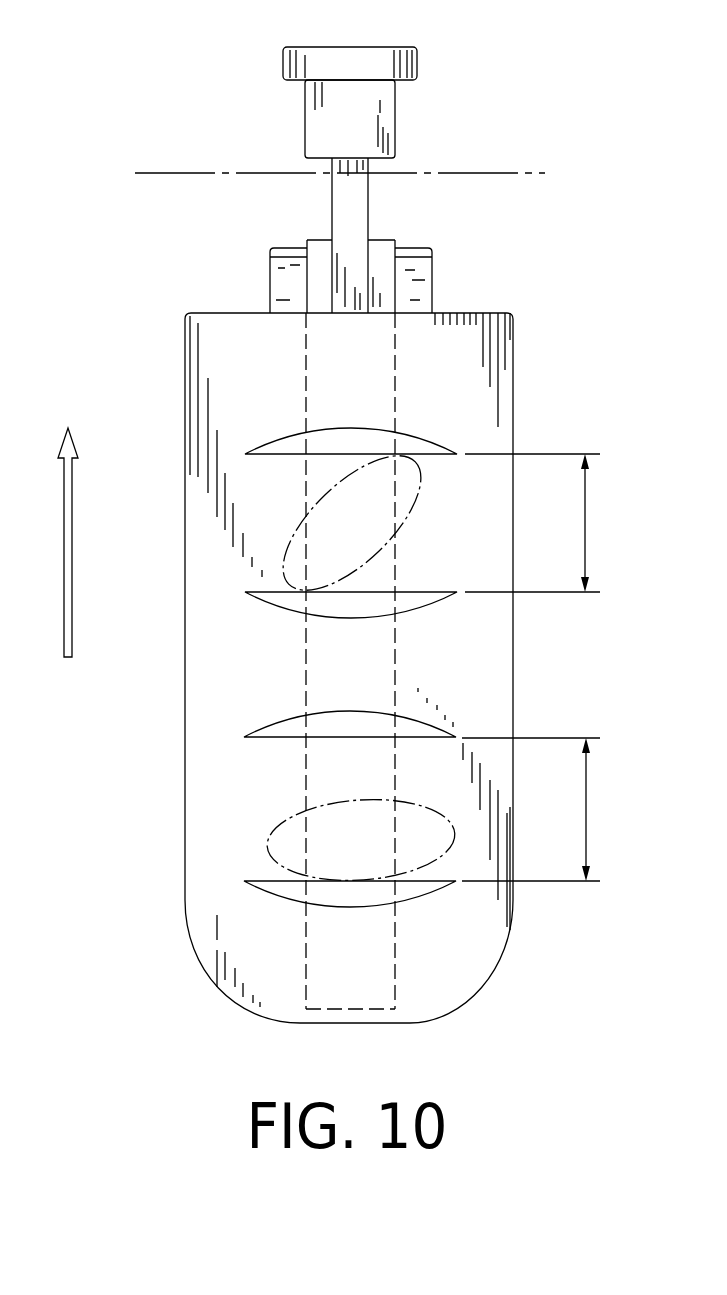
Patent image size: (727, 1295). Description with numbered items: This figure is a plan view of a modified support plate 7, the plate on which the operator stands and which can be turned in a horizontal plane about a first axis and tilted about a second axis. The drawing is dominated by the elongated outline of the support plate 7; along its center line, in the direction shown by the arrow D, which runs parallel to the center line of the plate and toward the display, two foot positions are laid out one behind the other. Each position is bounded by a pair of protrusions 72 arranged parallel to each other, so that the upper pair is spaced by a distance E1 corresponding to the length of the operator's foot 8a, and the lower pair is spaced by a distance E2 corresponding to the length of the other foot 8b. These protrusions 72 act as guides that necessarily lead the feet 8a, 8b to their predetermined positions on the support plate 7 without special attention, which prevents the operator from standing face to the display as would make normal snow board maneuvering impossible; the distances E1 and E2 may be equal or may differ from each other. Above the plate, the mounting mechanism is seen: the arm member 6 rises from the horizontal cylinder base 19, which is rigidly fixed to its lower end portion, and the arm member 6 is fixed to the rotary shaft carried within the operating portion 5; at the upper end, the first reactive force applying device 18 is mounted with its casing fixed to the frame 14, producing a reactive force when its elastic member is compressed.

The frame 14 is at (370, 60).
The first reactive force applying device 18 is at (396, 127).
The arm member 6 is at (357, 213).
The operating portion 5 is at (217, 173).
The horizontal cylinder base 19 is at (387, 296).
The support plate 7 is at (498, 387).
The protrusions 72 is at (282, 443).
The foot of the operator 8a is at (417, 515).
The foot of the operator 8b is at (423, 807).
The distance E1 is at (542, 523).
The distance E2 is at (540, 809).
The direction D is at (68, 562).